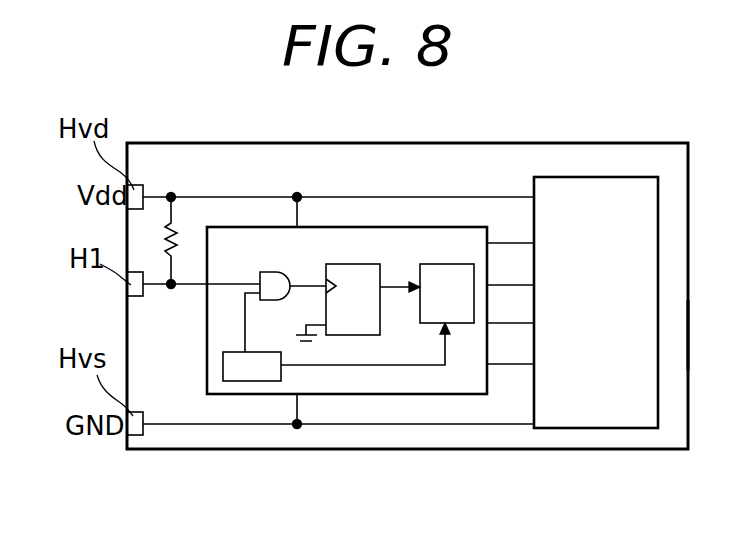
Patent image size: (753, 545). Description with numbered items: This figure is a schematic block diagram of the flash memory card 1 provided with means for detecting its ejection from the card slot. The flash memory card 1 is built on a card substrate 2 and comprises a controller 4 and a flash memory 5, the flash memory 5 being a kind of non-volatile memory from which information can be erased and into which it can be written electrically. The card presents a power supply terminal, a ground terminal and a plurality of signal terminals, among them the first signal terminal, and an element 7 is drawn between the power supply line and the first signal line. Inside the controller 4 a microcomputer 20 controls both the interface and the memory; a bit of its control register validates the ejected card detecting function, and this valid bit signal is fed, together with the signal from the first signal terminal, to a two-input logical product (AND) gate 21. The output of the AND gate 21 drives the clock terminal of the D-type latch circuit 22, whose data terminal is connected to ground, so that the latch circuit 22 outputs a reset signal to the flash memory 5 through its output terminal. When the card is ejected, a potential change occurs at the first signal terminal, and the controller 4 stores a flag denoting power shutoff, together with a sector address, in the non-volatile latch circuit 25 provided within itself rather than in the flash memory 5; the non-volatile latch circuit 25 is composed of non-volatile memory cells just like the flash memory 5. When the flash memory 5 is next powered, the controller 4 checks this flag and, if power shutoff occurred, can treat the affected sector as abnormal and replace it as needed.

The flash memory card 1 is at (653, 143).
The card substrate 2 is at (682, 333).
The controller 4 is at (392, 378).
The flash memory 5 is at (610, 428).
The resistor 7 is at (178, 238).
The microcomputer 20 is at (234, 370).
The 2-input logical product (AND) gate 21 is at (278, 280).
The D-type latch circuit 22 is at (350, 264).
The non-volatile latch circuit 25 is at (447, 264).